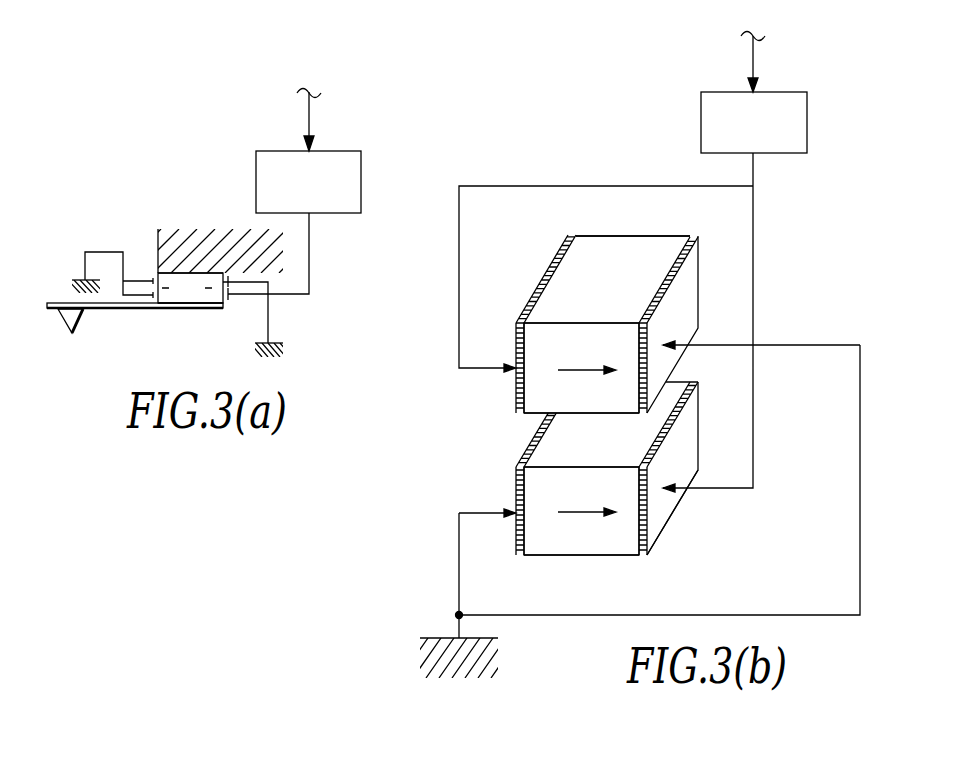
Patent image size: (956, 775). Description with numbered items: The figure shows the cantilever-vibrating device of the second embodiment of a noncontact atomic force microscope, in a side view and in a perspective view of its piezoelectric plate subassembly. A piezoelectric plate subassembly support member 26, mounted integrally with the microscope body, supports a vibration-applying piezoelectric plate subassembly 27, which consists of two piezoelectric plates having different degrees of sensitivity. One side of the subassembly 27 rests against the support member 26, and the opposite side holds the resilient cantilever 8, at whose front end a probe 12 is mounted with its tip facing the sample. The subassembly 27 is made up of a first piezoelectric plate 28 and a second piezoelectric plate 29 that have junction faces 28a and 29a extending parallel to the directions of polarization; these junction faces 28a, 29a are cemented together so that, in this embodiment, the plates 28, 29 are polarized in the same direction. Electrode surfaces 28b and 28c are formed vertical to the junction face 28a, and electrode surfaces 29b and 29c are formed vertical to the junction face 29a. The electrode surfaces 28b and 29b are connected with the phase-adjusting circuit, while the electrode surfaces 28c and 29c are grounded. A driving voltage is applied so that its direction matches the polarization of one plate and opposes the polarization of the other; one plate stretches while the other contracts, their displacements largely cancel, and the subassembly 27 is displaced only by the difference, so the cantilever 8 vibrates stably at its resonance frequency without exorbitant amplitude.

The cantilever 8 is at (110, 310).
The probe 12 is at (67, 323).
The piezoelectric plate subassembly support member 26 is at (242, 251).
The piezoelectric plate subassembly 27 is at (199, 298).
The first piezoelectric plate 28 is at (537, 261).
The junction face 28a is at (602, 418).
The electrode surface 28b is at (527, 300).
The electrode surface 28c is at (697, 288).
The second piezoelectric plate 29 is at (494, 450).
The junction face 29a is at (595, 460).
The electrode surface 29b is at (692, 440).
The electrode surface 29c is at (515, 533).